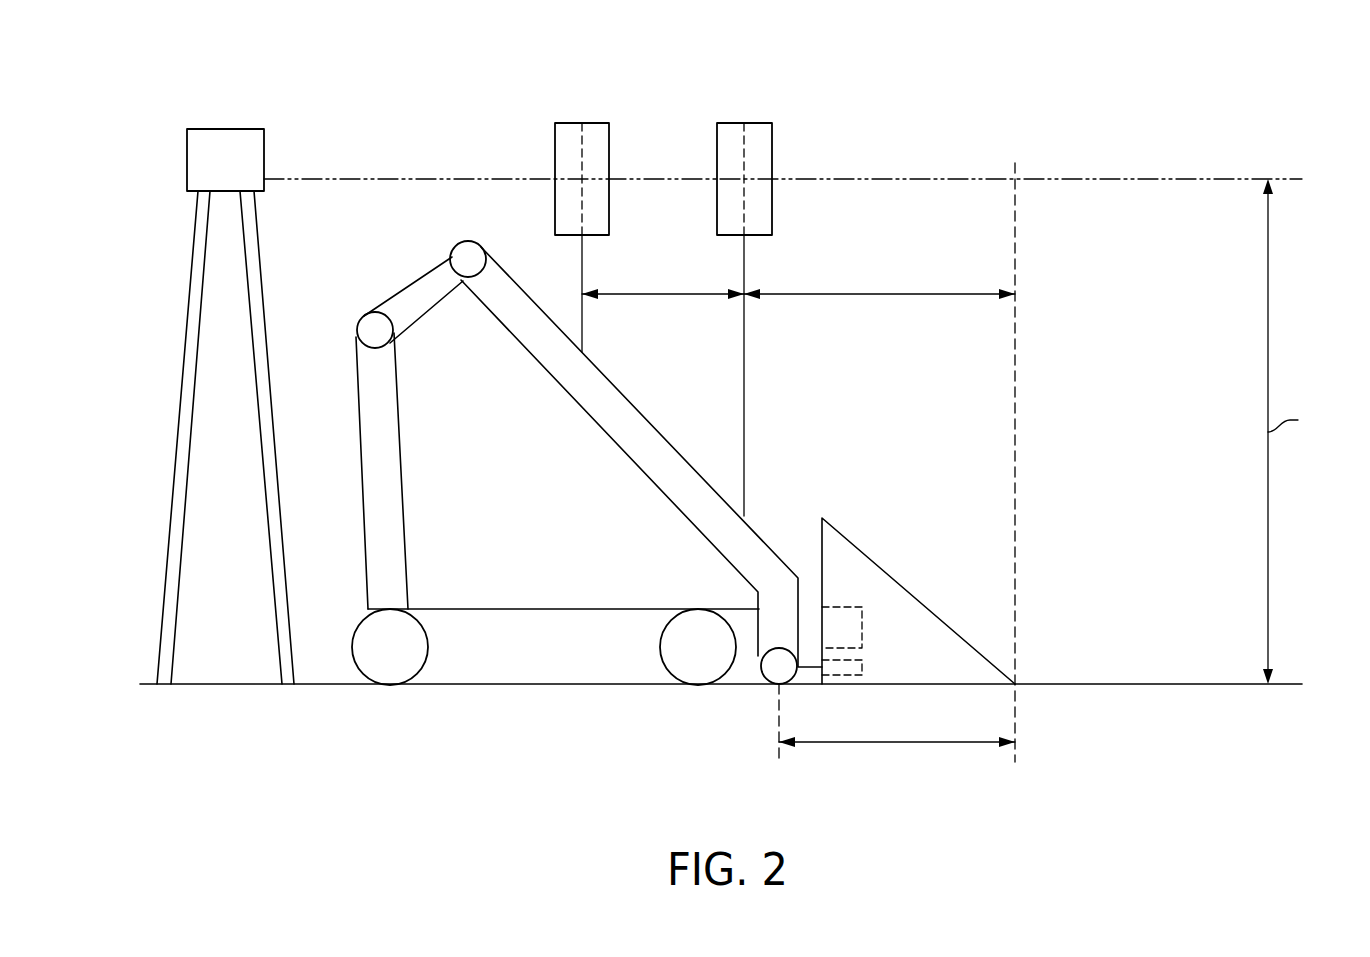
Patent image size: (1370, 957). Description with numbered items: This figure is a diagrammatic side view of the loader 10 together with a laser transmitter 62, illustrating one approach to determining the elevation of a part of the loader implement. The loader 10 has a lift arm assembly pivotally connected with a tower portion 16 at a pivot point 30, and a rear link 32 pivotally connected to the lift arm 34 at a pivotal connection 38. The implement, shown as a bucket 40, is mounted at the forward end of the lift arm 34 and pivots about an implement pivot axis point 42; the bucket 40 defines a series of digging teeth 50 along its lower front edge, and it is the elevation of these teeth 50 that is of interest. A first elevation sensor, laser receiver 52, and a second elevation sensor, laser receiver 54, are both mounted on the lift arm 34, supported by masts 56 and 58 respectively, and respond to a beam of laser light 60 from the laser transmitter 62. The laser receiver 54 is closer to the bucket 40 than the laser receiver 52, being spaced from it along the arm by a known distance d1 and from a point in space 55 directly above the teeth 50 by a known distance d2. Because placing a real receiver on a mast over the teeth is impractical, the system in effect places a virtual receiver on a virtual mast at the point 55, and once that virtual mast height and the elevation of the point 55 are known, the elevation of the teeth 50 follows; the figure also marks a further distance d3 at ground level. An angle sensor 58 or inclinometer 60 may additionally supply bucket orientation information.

The loader 10 is at (533, 607).
The tower portion 16 is at (362, 438).
The pivot point 30 is at (368, 330).
The rear link 32 is at (425, 303).
The lift arm 34 is at (612, 430).
The pivotal connection of rear link to lift arm 38 is at (464, 252).
The bucket 40 is at (902, 588).
The implement pivot axis point 42 is at (773, 672).
The digging teeth 50 is at (1015, 684).
The laser receiver 52 is at (596, 149).
The laser receiver 54 is at (759, 149).
The point in space 55 is at (1192, 431).
The mast 56 is at (582, 268).
The mast 58 is at (744, 396).
The beam of laser light 60 is at (343, 179).
The laser transmitter 62 is at (228, 129).
The distance d1 is at (662, 296).
The distance d2 is at (880, 296).
The distance d3 is at (896, 758).